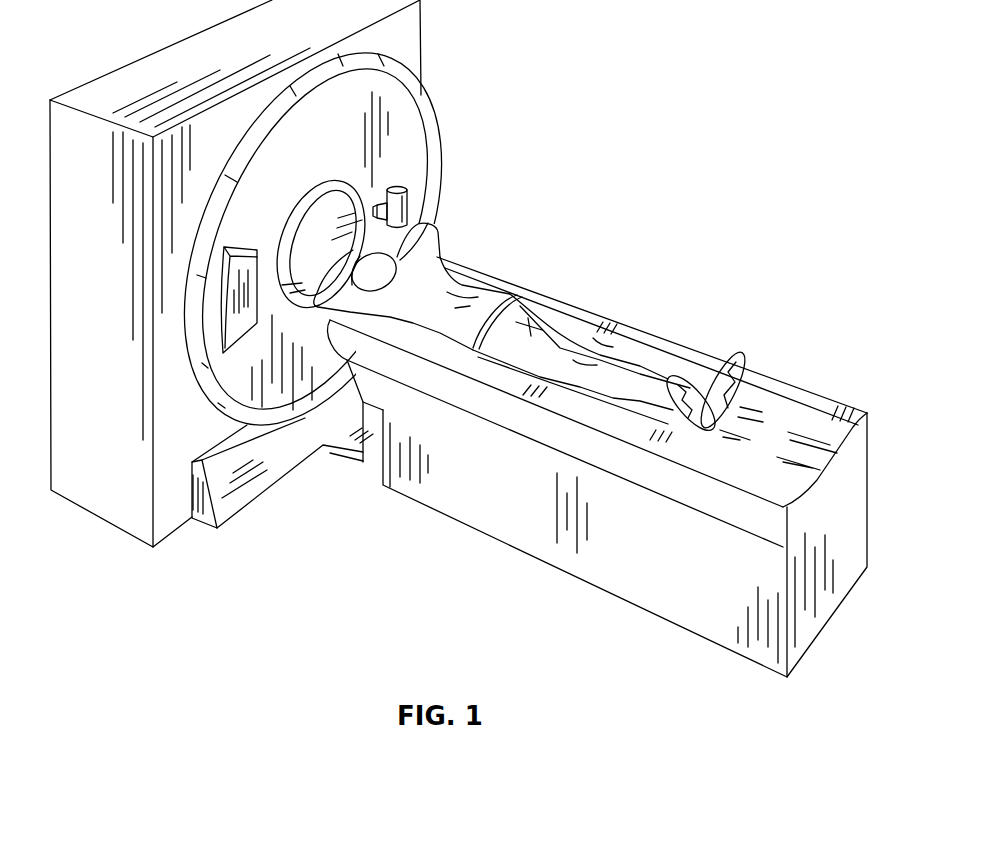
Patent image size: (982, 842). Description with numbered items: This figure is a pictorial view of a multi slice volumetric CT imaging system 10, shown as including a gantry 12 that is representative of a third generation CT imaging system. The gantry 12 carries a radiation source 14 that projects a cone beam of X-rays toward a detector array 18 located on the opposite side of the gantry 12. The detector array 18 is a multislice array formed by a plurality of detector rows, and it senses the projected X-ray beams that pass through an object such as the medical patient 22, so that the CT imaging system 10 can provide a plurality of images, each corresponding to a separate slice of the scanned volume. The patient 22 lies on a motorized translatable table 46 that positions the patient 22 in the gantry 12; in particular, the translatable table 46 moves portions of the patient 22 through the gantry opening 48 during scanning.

The CT imaging system 10 is at (361, 483).
The gantry 12 is at (100, 497).
The radiation source 14 is at (407, 207).
The detector array 18 is at (236, 336).
The patient 22 is at (479, 287).
The translatable table 46 is at (444, 513).
The gantry opening 48 is at (297, 213).